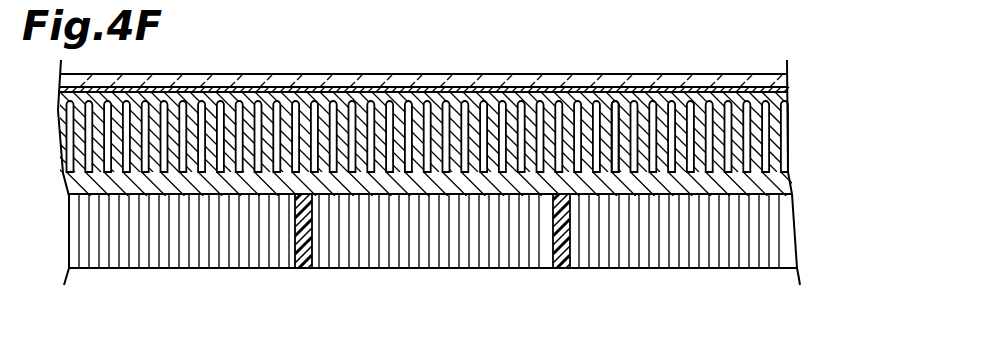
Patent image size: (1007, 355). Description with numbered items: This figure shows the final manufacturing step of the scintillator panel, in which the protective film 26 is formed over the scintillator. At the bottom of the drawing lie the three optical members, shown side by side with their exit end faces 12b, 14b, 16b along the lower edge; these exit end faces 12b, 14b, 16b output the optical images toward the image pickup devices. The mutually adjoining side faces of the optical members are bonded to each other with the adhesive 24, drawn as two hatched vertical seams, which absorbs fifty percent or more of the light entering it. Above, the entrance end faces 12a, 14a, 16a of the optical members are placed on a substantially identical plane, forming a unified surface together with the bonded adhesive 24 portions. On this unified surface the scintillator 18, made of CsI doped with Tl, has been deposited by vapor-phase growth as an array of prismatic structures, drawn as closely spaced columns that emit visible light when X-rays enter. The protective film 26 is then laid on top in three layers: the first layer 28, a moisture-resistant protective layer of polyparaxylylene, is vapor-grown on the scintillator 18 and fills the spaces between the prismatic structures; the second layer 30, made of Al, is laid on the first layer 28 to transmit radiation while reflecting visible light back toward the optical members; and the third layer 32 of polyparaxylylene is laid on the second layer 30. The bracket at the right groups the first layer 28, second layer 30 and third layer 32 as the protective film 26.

The entrance end face 12a is at (267, 193).
The entrance end face 14a is at (512, 193).
The entrance end face 16a is at (742, 193).
The exit end face 12b is at (166, 270).
The exit end face 14b is at (431, 270).
The exit end face 16b is at (681, 270).
The scintillator 18 is at (623, 112).
The adhesive 24 is at (303, 270).
The protective film 26 is at (855, 6).
The first layer 28 is at (790, 96).
The second layer 30 is at (778, 92).
The third layer 32 is at (768, 84).